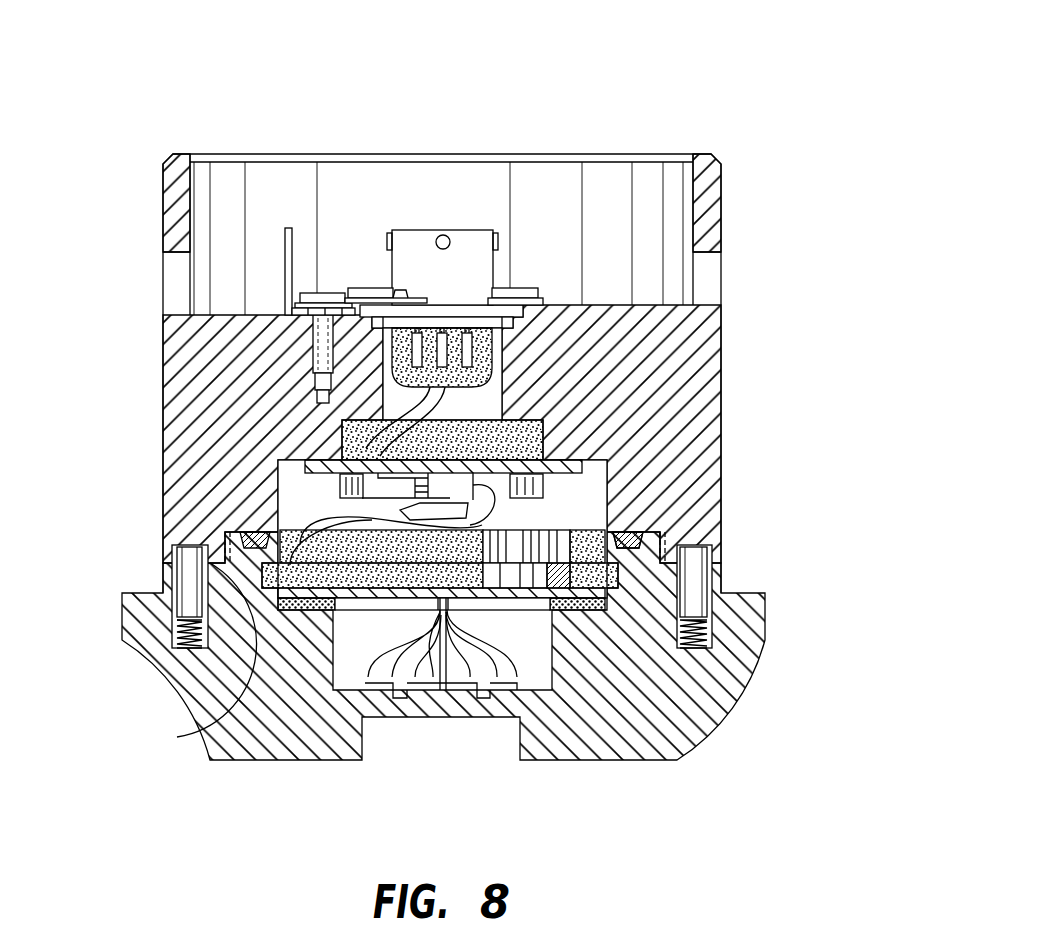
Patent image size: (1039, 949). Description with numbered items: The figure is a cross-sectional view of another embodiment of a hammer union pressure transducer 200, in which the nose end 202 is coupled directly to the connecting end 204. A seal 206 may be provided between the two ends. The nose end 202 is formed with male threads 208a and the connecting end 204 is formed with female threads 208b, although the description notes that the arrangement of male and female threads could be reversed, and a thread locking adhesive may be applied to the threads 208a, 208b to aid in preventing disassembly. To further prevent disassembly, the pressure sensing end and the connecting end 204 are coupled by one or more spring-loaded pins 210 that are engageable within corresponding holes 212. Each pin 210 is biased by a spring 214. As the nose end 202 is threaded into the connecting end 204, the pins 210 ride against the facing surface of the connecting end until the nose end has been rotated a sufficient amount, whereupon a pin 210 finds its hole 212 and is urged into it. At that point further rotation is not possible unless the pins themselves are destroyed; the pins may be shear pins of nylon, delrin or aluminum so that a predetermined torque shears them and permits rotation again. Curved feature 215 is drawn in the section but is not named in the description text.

The hammer union pressure transducer 200 is at (574, 92).
The nose end 202 is at (680, 753).
The connecting end 204 is at (718, 332).
The seal 206 is at (262, 530).
The male threads 208a is at (648, 530).
The female threads 208b is at (714, 516).
The spring-loaded pin 210 is at (705, 600).
The hole 212 is at (700, 556).
The spring 214 is at (708, 640).
The curved wall 215 is at (177, 737).